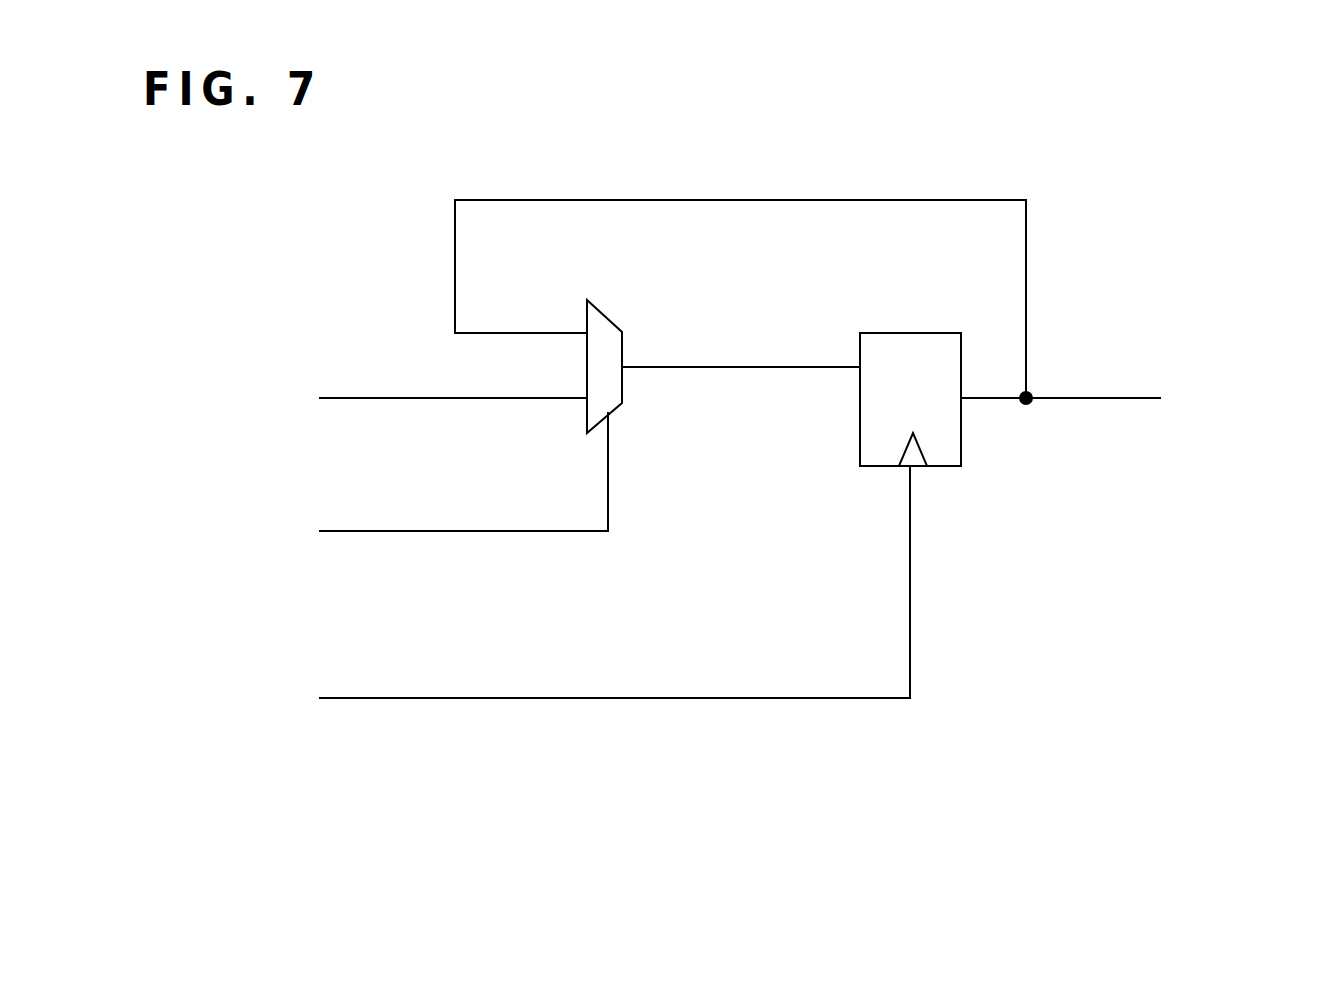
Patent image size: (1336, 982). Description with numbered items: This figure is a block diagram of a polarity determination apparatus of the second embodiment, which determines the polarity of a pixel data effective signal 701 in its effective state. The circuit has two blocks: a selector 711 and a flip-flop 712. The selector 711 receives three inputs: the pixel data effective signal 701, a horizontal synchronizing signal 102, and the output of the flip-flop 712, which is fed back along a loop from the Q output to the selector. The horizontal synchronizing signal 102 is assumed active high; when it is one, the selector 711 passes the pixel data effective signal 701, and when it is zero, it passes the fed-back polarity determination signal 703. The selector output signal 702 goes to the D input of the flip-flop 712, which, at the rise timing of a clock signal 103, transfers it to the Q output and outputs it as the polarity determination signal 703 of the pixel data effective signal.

The selector 711 is at (622, 290).
The flip-flop 712 is at (936, 332).
The pixel data effective signal 701 is at (263, 358).
The horizontal synchronizing signal 102 is at (178, 543).
The clock signal 103 is at (240, 680).
The selector output signal 702 is at (745, 370).
The polarity determination signal 703 is at (1214, 338).